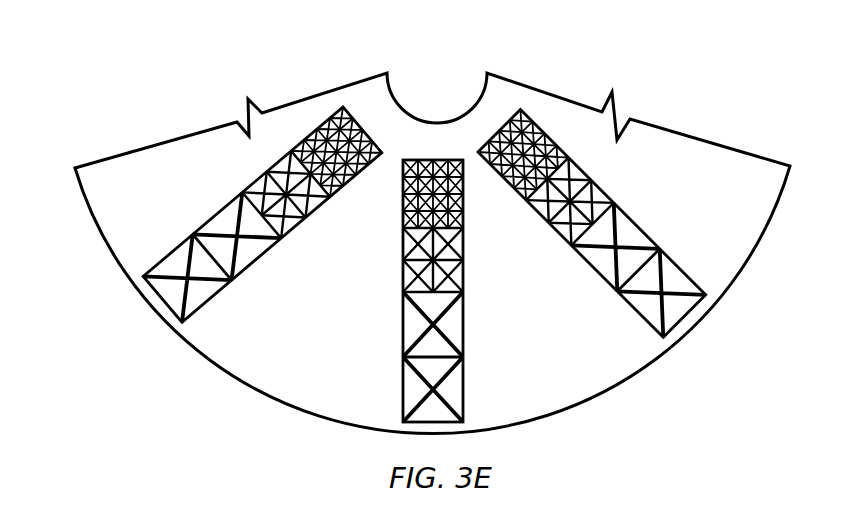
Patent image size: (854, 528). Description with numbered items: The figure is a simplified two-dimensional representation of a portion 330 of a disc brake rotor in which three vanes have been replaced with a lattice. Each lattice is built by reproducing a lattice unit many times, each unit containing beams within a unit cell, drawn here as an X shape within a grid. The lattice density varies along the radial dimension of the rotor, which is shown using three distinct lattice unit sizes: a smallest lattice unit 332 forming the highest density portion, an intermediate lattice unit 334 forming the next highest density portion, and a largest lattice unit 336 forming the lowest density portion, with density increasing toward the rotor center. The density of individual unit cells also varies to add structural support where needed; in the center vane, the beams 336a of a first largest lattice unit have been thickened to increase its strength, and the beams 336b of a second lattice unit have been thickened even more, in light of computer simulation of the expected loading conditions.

The portion of a rotor 330 is at (166, 96).
The smallest lattice unit 332 is at (402, 210).
The intermediate lattice unit 334 is at (417, 273).
The largest lattice unit 336 is at (437, 357).
The beams of a first lattice unit 336a is at (452, 335).
The beams of a second lattice unit 336b is at (452, 405).